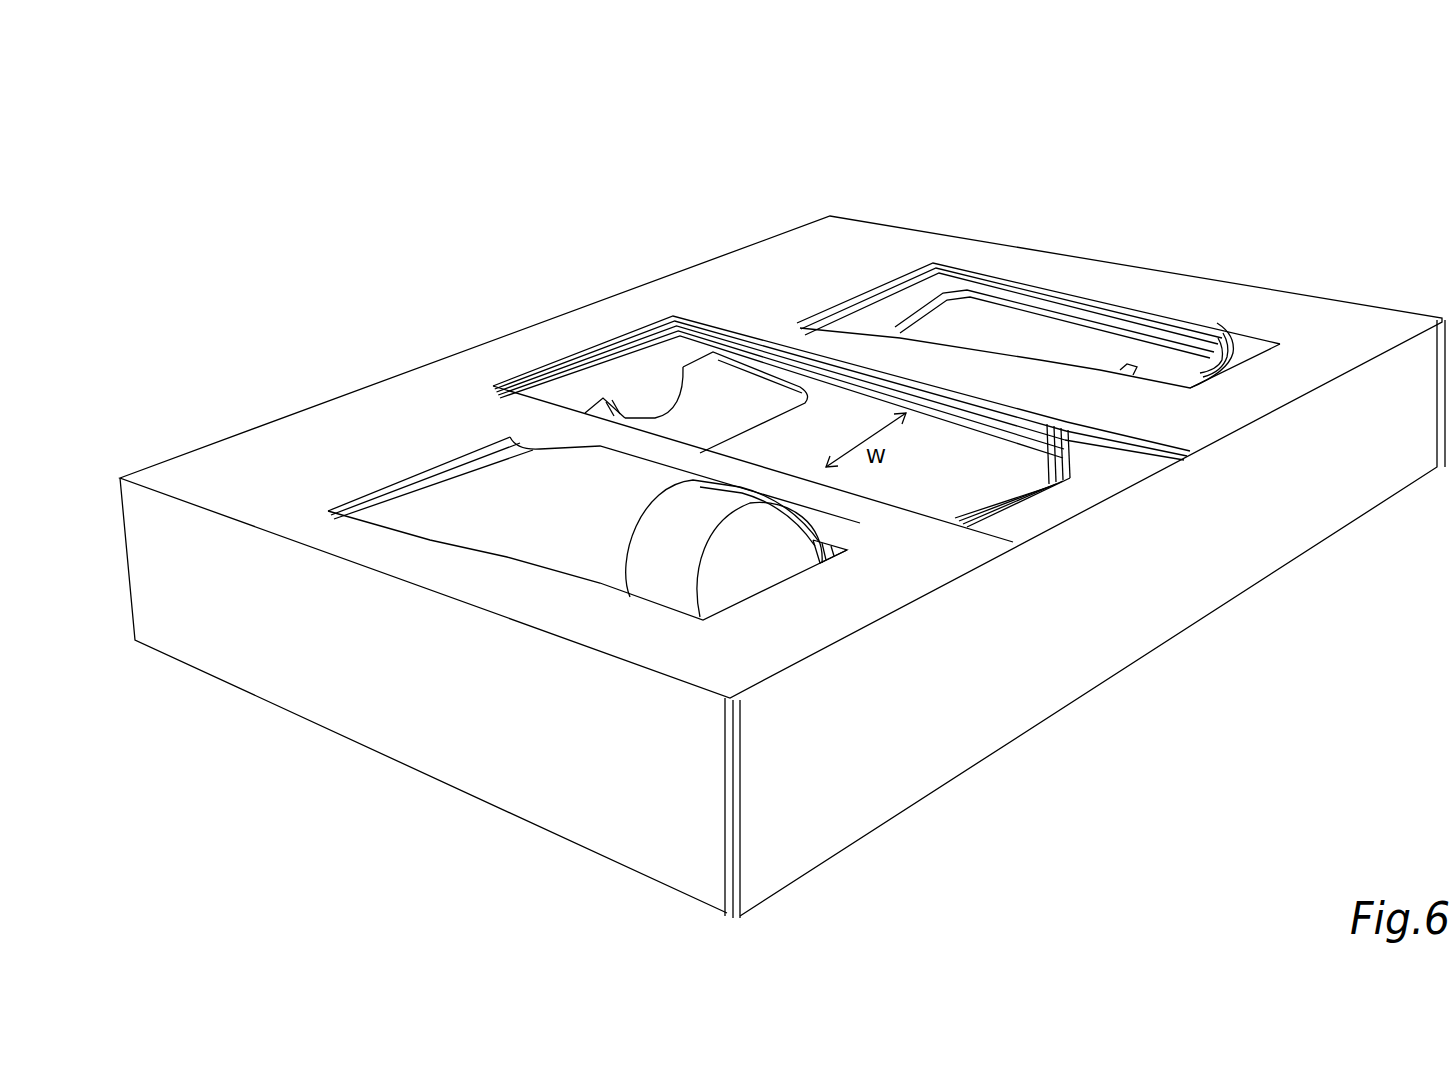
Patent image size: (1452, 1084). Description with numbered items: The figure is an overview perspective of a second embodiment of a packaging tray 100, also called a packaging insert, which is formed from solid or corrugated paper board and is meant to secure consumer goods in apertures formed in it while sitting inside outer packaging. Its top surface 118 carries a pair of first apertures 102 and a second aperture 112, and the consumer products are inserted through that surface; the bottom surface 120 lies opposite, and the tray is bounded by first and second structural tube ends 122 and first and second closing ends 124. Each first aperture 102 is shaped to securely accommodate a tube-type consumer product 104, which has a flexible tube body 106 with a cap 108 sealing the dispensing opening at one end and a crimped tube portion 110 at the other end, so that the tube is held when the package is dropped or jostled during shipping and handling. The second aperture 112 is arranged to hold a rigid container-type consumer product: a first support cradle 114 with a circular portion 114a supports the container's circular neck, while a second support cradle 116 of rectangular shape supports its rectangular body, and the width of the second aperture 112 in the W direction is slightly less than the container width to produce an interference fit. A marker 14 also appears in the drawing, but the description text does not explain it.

The packaging tray 100 is at (465, 232).
The first apertures 102 is at (500, 557).
The tube-type consumer product 104 is at (488, 443).
The tube body 106 is at (577, 487).
The cap 108 is at (660, 550).
The crimped tube portion 110 is at (347, 505).
The second aperture 112 is at (745, 397).
The first support cradle 114 is at (684, 365).
The circular portion 114a is at (650, 410).
The second support cradle 116 is at (1040, 488).
The top surface 118 is at (1318, 332).
The bottom surface 120 is at (914, 845).
The structural tube ends 122 is at (1150, 600).
The closing ends 124 is at (303, 637).
The section indicator 14 is at (322, 364).